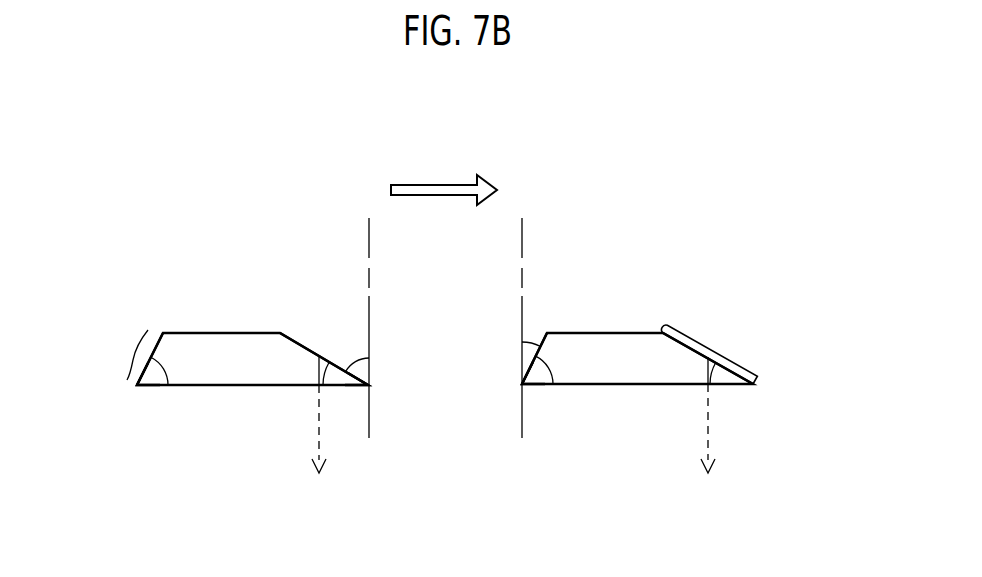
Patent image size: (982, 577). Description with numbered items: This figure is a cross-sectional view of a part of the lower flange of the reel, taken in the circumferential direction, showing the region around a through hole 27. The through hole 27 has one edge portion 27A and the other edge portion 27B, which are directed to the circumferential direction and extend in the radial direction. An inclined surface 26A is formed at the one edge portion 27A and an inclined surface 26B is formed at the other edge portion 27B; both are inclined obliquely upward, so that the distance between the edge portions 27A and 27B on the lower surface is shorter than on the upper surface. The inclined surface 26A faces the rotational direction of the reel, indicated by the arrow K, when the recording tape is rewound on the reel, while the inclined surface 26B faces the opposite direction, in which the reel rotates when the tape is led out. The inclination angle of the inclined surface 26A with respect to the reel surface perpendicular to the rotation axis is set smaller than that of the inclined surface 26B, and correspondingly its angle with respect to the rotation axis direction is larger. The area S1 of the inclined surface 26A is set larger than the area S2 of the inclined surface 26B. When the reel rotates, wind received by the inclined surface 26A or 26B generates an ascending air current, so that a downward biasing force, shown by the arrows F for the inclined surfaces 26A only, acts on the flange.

The arrow indicating rotational direction K is at (435, 183).
The inclined surface 26A is at (303, 343).
The inclined surface 26B is at (156, 336).
The through hole 27 is at (518, 386).
The one edge portion 27A is at (369, 386).
The other edge portion 27B is at (137, 385).
The area of the inclined surface 26A S1 is at (717, 343).
The area of the inclined surface 26B S2 is at (135, 350).
The biasing force F is at (317, 407).